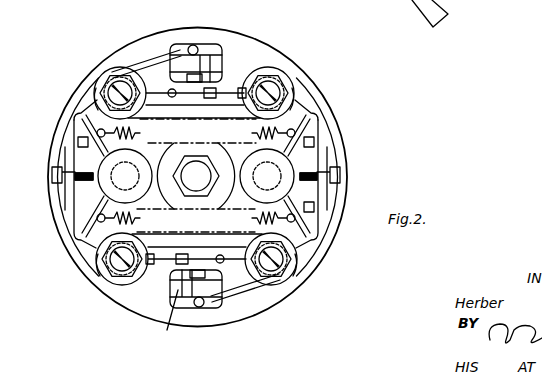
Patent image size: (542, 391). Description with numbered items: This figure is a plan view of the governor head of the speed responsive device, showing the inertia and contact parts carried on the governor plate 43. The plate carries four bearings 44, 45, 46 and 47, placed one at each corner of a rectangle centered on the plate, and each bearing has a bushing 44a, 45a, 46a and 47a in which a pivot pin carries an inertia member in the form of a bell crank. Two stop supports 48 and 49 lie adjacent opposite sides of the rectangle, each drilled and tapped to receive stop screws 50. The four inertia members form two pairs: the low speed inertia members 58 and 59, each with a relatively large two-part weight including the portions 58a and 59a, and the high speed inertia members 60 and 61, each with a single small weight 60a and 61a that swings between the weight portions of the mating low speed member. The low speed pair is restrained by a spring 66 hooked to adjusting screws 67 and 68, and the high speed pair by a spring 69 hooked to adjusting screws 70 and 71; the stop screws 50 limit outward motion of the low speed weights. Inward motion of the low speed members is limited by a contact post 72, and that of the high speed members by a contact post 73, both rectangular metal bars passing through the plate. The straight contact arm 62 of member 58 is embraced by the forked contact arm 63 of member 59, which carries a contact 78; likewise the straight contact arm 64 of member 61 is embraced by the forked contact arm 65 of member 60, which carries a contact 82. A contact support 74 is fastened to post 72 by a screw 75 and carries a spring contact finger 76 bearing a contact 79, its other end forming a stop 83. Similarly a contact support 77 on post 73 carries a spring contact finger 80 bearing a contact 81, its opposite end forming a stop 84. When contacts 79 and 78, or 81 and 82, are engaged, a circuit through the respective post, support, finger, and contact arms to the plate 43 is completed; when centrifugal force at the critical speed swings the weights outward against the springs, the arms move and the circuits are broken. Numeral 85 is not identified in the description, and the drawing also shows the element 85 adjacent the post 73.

The governor plate 43 is at (149, 19).
The pivot pin 85 is at (197, 46).
The spring contact finger 80 is at (166, 55).
The contact support 77 is at (150, 67).
The bushing 47a is at (107, 85).
The bearing 47 is at (94, 91).
The inertia member 60 is at (74, 124).
The contact post 73 is at (206, 63).
The contact 81 is at (203, 86).
The bushing 46a is at (279, 88).
The bearing 46 is at (294, 98).
The inertia member 61 is at (310, 122).
The adjusting screw 71 is at (314, 142).
The governor weight portion 59a is at (322, 160).
The stop screw 50 is at (56, 171).
The stop support 49 is at (329, 191).
The adjusting screw 68 is at (312, 212).
The inertia member 59 is at (320, 236).
The bearing 45 is at (297, 268).
The bushing 45a is at (276, 283).
The spring contact finger 76 is at (228, 292).
The screw 75 is at (207, 300).
The contact support 74 is at (166, 320).
The contact post 72 is at (170, 291).
The contact 79 is at (170, 277).
The contact arm 62 is at (162, 255).
The stop 83 is at (192, 262).
The contact 78 is at (212, 257).
The contact arm 63 is at (221, 258).
The bearing 44 is at (96, 268).
The bushing 44a is at (100, 282).
The inertia member 58 is at (72, 240).
The adjusting screw 67 is at (70, 212).
The stop support 48 is at (62, 190).
The governor weight portion 58a is at (72, 152).
The adjusting screw 70 is at (62, 138).
The spring 69 is at (137, 133).
The spring 66 is at (137, 220).
The governor weight 60a is at (125, 176).
The governor weight 61a is at (267, 176).
The contact arm 65 is at (194, 111).
The contact 82 is at (173, 97).
The stop 84 is at (210, 98).
The contact arm 64 is at (241, 97).